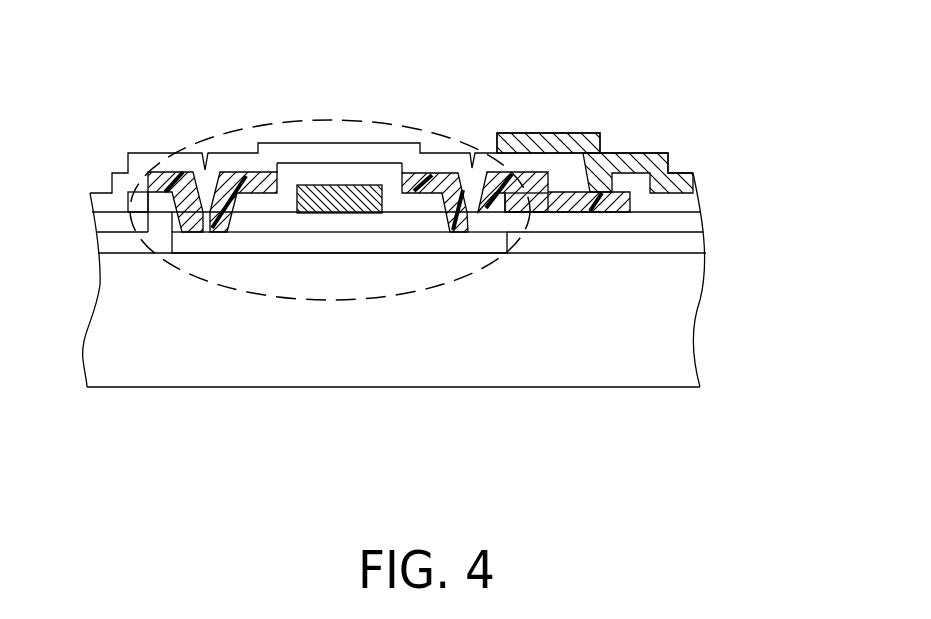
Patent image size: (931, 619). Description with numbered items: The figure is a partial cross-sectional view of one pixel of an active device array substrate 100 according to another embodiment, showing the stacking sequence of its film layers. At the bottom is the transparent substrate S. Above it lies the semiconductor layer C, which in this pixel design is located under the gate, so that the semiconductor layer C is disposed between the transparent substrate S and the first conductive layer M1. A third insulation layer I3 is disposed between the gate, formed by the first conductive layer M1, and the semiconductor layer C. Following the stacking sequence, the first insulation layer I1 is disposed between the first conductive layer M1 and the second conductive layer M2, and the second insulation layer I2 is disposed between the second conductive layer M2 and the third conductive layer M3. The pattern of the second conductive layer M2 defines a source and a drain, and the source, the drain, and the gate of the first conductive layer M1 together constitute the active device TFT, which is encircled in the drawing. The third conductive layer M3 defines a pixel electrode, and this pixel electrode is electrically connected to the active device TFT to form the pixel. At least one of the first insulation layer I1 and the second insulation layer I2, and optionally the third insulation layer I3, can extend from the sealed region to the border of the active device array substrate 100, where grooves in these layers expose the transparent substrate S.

The active device array substrate 100 is at (702, 477).
The transparent substrate S is at (682, 318).
The first insulation layer I1 is at (115, 223).
The second insulation layer I2 is at (147, 160).
The third insulation layer I3 is at (295, 222).
The first conductive layer M1 is at (333, 205).
The second conductive layer M2 is at (195, 225).
The third conductive layer M3 is at (687, 182).
The semiconductor layer C is at (257, 242).
The active device TFT is at (263, 125).